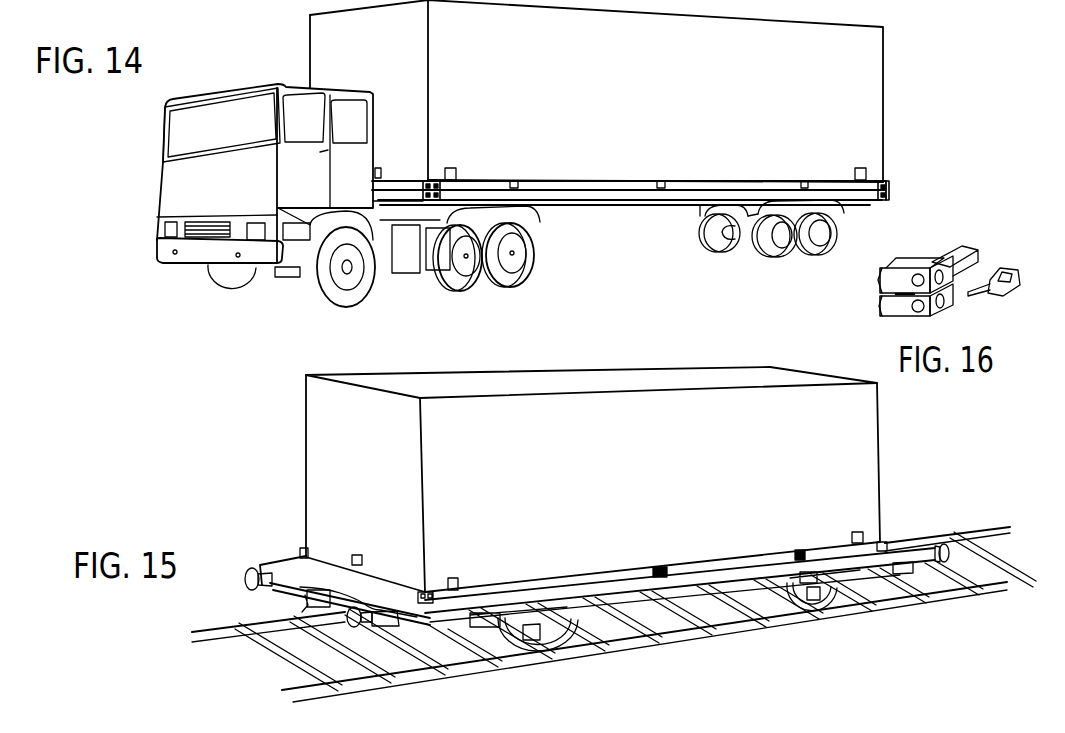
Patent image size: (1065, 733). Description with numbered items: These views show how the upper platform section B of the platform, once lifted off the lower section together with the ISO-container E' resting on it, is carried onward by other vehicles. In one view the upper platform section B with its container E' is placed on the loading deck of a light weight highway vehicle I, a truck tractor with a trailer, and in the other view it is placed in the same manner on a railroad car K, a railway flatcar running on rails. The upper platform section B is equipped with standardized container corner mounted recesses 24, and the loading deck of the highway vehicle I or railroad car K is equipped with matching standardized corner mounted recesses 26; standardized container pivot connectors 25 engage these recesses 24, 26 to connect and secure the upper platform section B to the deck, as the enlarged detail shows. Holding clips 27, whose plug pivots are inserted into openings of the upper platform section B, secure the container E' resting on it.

In FIG. 14, the container corner mounted recesses 24 is at (908, 207).
In FIG. 16, the container corner mounted recesses 24 is at (940, 300).
In FIG. 15, the container corner mounted recesses 24 is at (301, 549).
In FIG. 16, the container pivot connectors 25 is at (1005, 290).
In FIG. 14, the corner mounted recesses of the loading deck 26 is at (426, 205).
In FIG. 16, the corner mounted recesses of the loading deck 26 is at (928, 308).
In FIG. 15, the corner mounted recesses of the loading deck 26 is at (433, 596).
In FIG. 14, the holding clips 27 is at (457, 167).
In FIG. 15, the holding clips 27 is at (452, 580).
In FIG. 14, the upper platform section B is at (633, 183).
In FIG. 16, the upper platform section B is at (963, 262).
In FIG. 15, the upper platform section B is at (702, 567).
In FIG. 14, the ISO-container E is at (862, 93).
In FIG. 16, the ISO-container E is at (997, 216).
In FIG. 15, the ISO-container E is at (593, 479).
In FIG. 14, the highway vehicle I is at (570, 207).
In FIG. 16, the railroad car K is at (892, 306).
In FIG. 15, the railroad car K is at (617, 590).